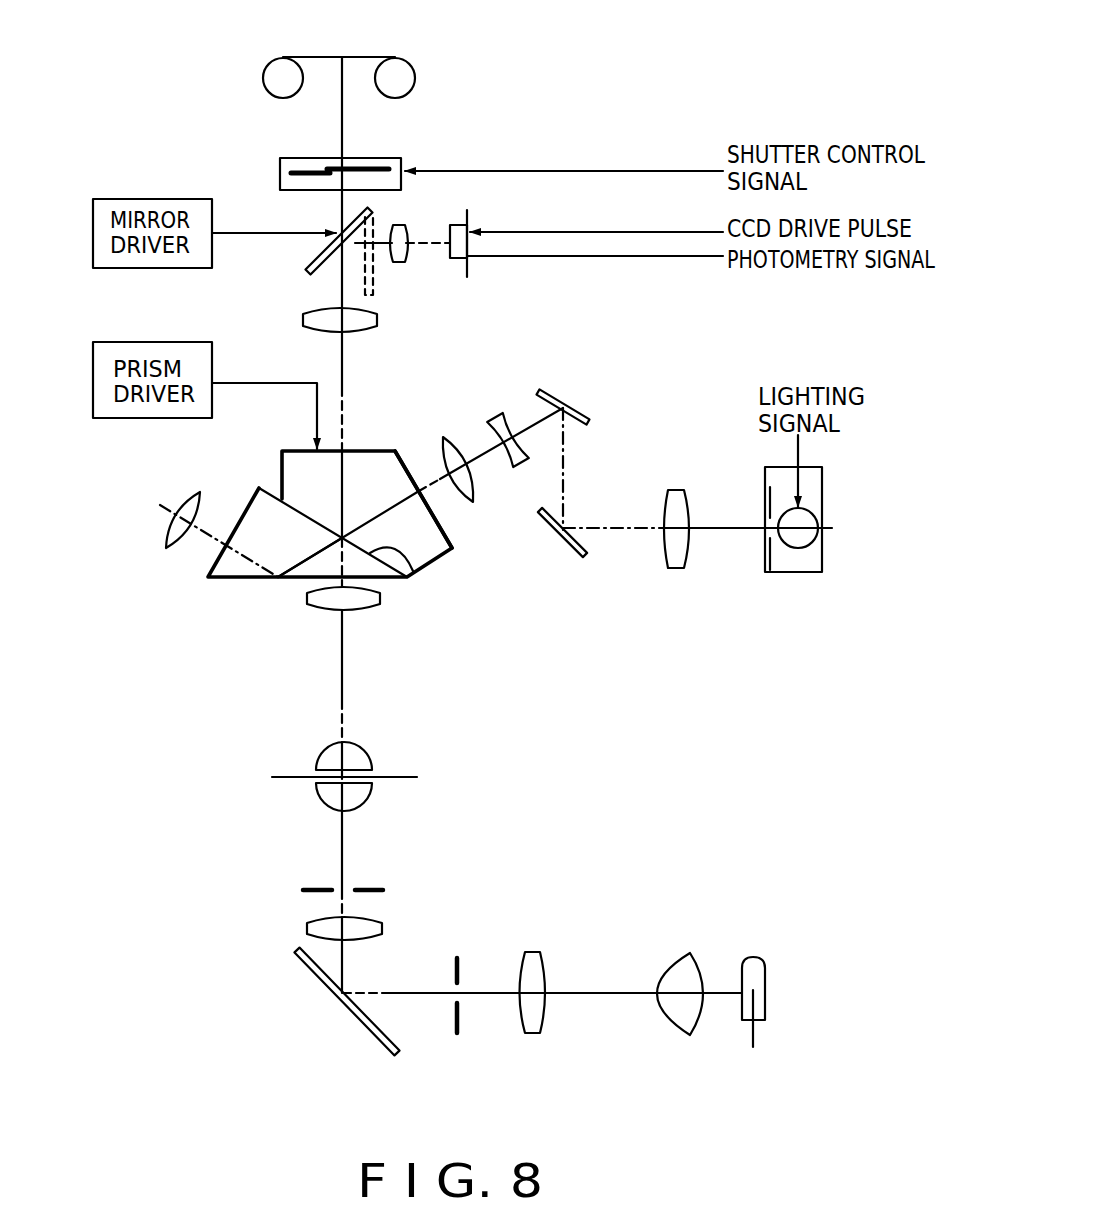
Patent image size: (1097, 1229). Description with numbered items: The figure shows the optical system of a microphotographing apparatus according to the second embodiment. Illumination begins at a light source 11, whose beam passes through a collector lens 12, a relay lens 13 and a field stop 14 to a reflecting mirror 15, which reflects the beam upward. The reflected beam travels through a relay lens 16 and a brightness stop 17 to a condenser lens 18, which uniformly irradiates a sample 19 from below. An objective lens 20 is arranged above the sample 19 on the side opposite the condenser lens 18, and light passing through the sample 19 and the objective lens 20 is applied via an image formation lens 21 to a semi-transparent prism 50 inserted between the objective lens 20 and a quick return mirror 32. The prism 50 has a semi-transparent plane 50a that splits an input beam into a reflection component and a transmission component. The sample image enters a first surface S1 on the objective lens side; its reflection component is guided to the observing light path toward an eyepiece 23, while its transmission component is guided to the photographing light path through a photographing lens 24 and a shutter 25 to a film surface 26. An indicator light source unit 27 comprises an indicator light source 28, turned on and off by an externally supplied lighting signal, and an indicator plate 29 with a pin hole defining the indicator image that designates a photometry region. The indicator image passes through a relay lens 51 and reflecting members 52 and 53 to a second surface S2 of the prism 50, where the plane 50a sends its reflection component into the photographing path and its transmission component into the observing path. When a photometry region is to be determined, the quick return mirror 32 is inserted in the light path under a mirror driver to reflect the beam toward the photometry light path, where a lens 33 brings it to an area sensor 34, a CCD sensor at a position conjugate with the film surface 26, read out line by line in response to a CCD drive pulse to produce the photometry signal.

The light source 11 is at (765, 976).
The collector lens 12 is at (689, 960).
The relay lens 13 is at (530, 960).
The field stop 14 is at (456, 957).
The reflecting mirror 15 is at (376, 1036).
The relay lens 16 is at (310, 929).
The brightness stop 17 is at (320, 886).
The condenser lens 18 is at (358, 795).
The sample 19 is at (293, 776).
The objective lens 20 is at (358, 760).
The image formation lens 21 is at (358, 604).
The eyepiece 23 is at (164, 545).
The photographing lens 24 is at (358, 326).
The shutter 25 is at (282, 169).
The film surface 26 is at (394, 58).
The indicator light source unit 27 is at (823, 483).
The indicator light source 28 is at (802, 543).
The indicator plate 29 is at (774, 558).
The quick return mirror 32 is at (308, 258).
The lens 33 is at (405, 236).
The area sensor 34 is at (472, 216).
The semi-transparent prism 50 is at (236, 580).
The semi-transparent plane 50a is at (416, 572).
The relay lens 51 is at (677, 553).
The reflecting member 52 is at (567, 553).
The reflecting member 53 is at (569, 392).
The first surface S1 is at (278, 579).
The second surface S2 is at (408, 462).